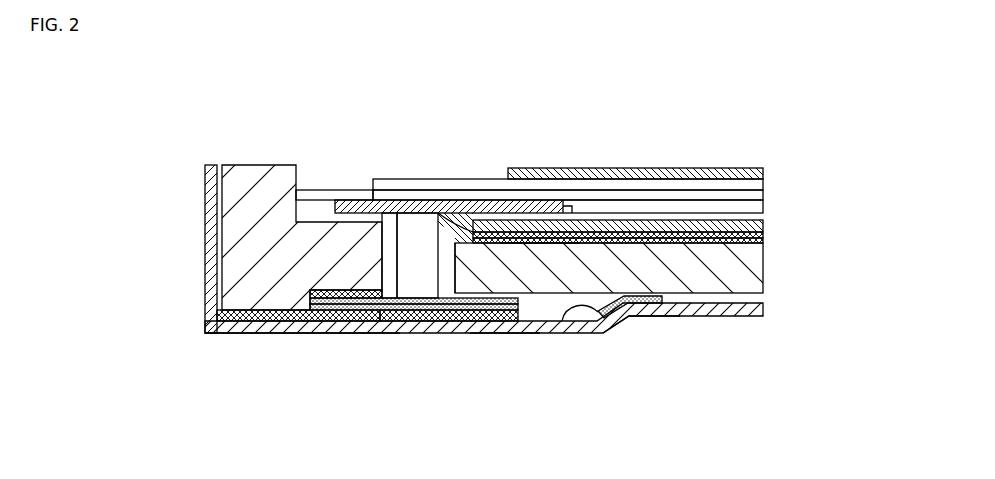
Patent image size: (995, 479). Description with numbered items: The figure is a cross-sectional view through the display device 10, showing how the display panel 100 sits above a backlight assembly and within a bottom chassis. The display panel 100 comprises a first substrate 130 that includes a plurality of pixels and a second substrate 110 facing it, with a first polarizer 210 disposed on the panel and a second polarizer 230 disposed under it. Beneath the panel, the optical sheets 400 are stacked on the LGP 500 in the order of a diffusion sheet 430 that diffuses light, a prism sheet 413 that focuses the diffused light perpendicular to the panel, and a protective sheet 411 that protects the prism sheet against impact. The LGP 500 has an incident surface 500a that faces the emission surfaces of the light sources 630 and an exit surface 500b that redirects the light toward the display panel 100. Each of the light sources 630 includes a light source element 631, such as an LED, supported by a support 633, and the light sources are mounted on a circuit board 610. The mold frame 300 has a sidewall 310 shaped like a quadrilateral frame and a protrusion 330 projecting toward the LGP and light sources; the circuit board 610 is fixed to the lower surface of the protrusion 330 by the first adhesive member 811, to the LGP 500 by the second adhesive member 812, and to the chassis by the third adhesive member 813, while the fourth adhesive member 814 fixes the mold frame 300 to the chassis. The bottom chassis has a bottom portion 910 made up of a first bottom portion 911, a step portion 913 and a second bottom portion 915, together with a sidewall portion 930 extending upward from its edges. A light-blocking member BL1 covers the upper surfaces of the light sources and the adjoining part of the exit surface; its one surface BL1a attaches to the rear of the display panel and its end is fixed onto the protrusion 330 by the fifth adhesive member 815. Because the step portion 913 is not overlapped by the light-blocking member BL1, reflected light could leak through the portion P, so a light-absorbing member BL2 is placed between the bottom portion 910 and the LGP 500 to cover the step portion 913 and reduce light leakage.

The display device 10 is at (257, 101).
The display panel 100 is at (620, 181).
The second substrate 110 is at (763, 183).
The first substrate 130 is at (763, 194).
The first polarizer 210 is at (736, 168).
The second polarizer 230 is at (763, 207).
The mold frame 300 is at (250, 240).
The sidewall 310 is at (250, 192).
The protrusion 330 is at (340, 258).
The optical sheets 400 is at (673, 242).
The protective sheet 411 is at (763, 226).
The prism sheet 413 is at (763, 236).
The diffusion sheet 430 is at (763, 242).
The LGP 500 is at (763, 284).
The incident surface 500a is at (466, 243).
The exit surface 500b is at (540, 213).
The circuit board 610 is at (347, 300).
The light sources 630 is at (414, 308).
The light source element 631 is at (455, 275).
The support 633 is at (420, 250).
The first adhesive member 811 is at (310, 318).
The second adhesive member 812 is at (475, 333).
The third adhesive member 813 is at (375, 320).
The fourth adhesive member 814 is at (243, 333).
The fifth adhesive member 815 is at (354, 190).
The bottom portion 910 is at (484, 371).
The first bottom portion 911 is at (493, 333).
The step portion 913 is at (560, 333).
The second bottom portion 915 is at (641, 352).
The sidewall portion 930 is at (210, 241).
The light-blocking member BL1 is at (445, 206).
The one surface of the light-blocking member BL1a is at (442, 215).
The light-absorbing member BL2 is at (642, 314).
The portion not covered by the light-blocking member P is at (622, 168).